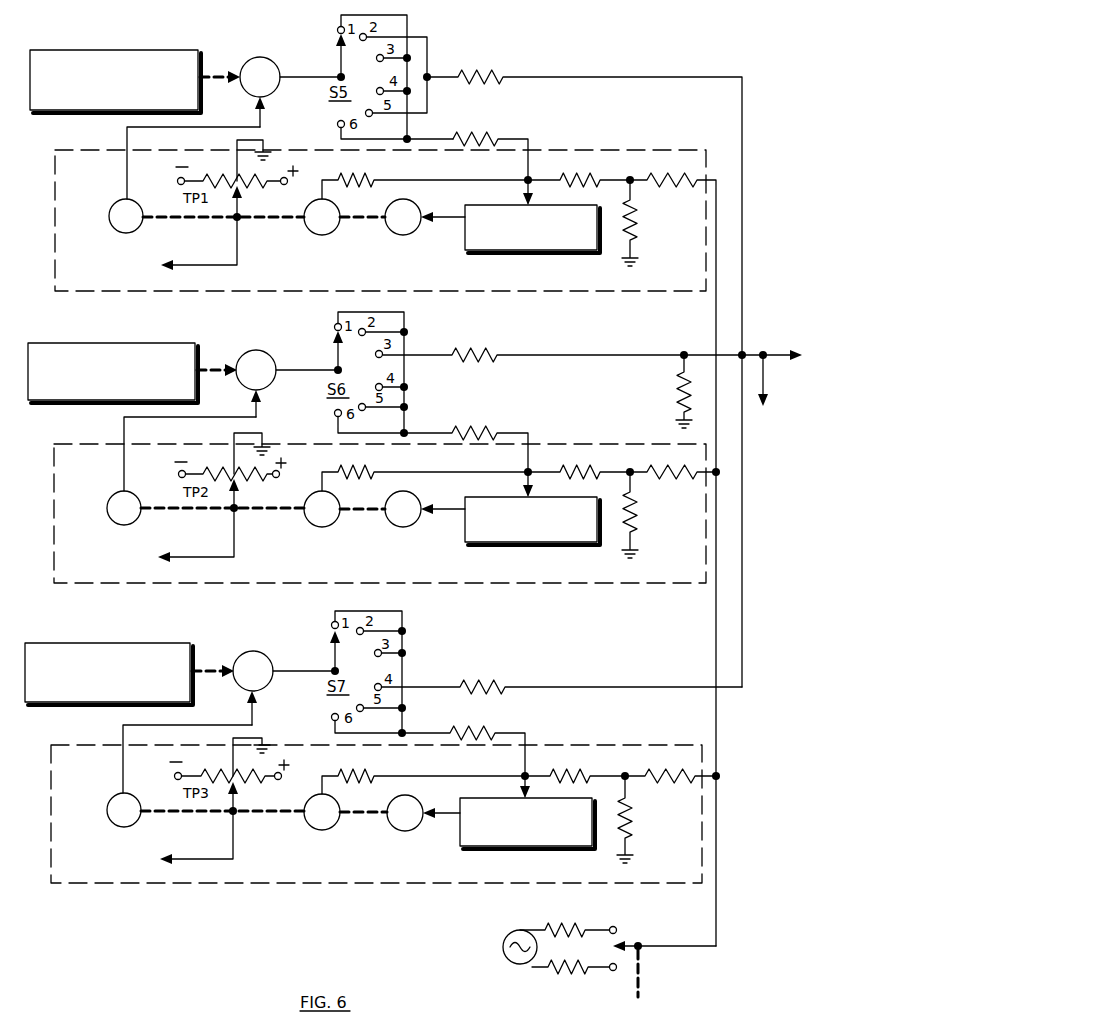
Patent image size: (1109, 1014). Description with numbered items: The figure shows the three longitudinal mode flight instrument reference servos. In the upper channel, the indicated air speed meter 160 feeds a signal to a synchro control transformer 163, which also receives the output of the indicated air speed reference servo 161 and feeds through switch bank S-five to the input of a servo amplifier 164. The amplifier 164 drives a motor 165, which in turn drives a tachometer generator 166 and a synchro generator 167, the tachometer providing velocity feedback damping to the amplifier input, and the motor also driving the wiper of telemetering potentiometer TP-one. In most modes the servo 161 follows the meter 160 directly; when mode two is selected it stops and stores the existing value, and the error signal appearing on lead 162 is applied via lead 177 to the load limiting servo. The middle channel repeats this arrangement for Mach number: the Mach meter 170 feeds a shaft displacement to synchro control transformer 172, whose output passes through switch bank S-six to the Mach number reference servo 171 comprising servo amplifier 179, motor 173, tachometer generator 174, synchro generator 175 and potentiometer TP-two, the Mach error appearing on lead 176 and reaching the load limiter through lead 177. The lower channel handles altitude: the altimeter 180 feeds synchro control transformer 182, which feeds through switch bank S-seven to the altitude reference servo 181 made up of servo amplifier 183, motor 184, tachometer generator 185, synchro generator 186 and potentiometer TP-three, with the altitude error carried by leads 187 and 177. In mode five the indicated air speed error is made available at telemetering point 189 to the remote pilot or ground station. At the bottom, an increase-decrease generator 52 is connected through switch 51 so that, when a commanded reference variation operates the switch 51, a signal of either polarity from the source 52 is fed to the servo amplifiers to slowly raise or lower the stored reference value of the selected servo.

The indicated air speed meter 160 is at (183, 60).
The synchro control transformer 163 is at (272, 58).
The lead 162 is at (449, 71).
The indicated air speed reference servo 161 is at (64, 216).
The synchro generator 167 is at (134, 226).
The tachometer generator 166 is at (334, 230).
The motor 165 is at (416, 230).
The servo amplifier 164 is at (577, 240).
The Mach meter 170 is at (145, 352).
The synchro control transformer 172 is at (271, 360).
The lead 176 is at (435, 352).
The lead 177 is at (779, 354).
The telemetering point 189 is at (767, 371).
The Mach number reference servo 171 is at (62, 509).
The synchro generator 175 is at (110, 517).
The tachometer generator 174 is at (311, 525).
The motor 173 is at (392, 525).
The servo amplifier 179 is at (470, 545).
The altimeter 180 is at (118, 648).
The synchro control transformer 182 is at (262, 654).
The lead 187 is at (433, 686).
The altitude reference servo 181 is at (62, 809).
The synchro generator 186 is at (108, 823).
The tachometer generator 185 is at (311, 828).
The motor 184 is at (395, 831).
The servo amplifier 183 is at (547, 840).
The increase-decrease generator 52 is at (508, 937).
The switch 51 is at (639, 944).